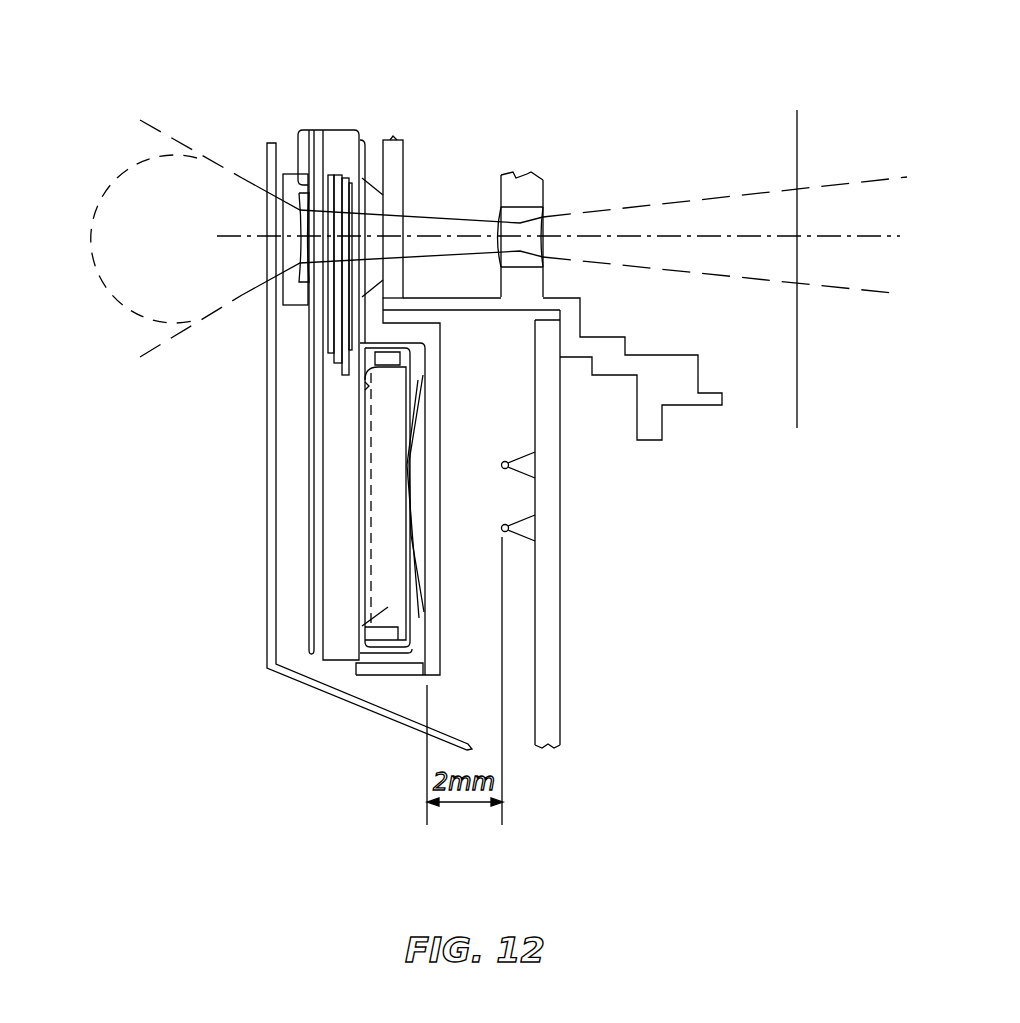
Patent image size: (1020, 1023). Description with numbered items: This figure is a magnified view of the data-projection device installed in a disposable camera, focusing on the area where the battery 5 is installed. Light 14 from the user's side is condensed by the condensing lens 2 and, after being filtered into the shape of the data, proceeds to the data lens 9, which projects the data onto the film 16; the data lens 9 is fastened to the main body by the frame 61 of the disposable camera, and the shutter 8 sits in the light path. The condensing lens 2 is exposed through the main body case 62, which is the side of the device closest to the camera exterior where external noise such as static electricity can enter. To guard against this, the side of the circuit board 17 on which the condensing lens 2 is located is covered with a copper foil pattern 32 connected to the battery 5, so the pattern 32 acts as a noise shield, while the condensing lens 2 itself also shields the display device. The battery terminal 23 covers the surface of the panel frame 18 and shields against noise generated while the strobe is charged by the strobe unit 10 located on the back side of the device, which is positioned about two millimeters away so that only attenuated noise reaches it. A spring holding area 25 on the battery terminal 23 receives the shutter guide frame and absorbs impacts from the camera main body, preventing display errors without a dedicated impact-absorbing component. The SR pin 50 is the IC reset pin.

The condensing lens 2 is at (288, 172).
The battery 5 is at (327, 657).
The shutter 8 is at (398, 172).
The data lens 9 is at (530, 215).
The strobe unit 10 is at (552, 692).
The light 14 is at (132, 247).
The film 16 is at (798, 148).
The circuit board 17 is at (316, 148).
The panel frame 18 is at (337, 145).
The battery terminal 23 is at (363, 145).
The spring holding area 25 is at (420, 593).
The copper foil pattern 32 is at (310, 610).
The SR pin 50 is at (413, 667).
The frame 61 is at (672, 388).
The main body case 62 is at (272, 540).